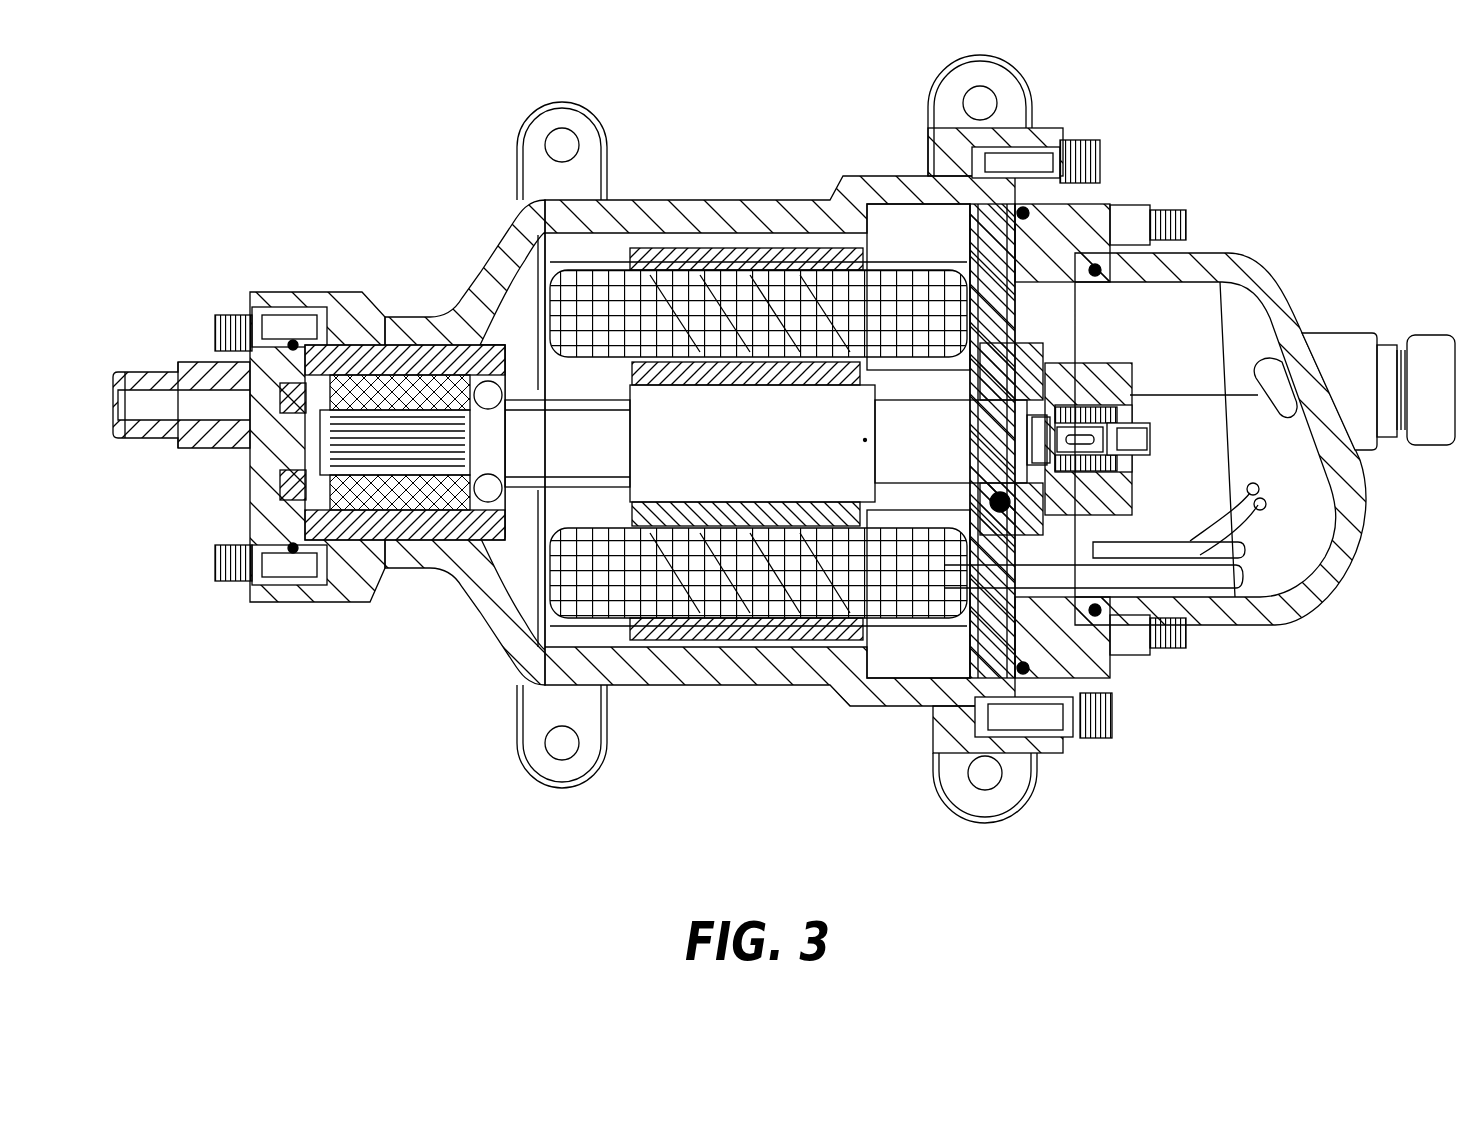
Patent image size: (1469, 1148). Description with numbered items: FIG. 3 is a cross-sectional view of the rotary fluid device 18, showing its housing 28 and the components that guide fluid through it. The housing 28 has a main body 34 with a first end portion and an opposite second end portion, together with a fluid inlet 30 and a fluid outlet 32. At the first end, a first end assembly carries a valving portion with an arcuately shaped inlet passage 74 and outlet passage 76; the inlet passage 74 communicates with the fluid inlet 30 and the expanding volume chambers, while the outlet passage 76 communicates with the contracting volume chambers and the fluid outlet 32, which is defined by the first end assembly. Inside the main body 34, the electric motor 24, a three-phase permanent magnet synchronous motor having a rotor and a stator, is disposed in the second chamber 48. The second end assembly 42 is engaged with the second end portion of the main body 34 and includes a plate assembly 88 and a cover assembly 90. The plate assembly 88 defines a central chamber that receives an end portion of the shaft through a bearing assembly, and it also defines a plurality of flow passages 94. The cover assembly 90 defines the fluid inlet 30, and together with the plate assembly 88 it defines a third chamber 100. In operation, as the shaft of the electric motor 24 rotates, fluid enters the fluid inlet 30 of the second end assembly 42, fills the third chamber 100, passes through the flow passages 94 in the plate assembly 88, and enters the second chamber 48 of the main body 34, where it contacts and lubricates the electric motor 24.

The rotary fluid device 18 is at (418, 93).
The housing 28 is at (752, 130).
The electric motor 24 is at (892, 240).
The second chamber 48 is at (760, 636).
The plate assembly 88 is at (1040, 125).
The flow passages 94 is at (1082, 210).
The third chamber 100 is at (1200, 300).
The outlet passage 76 is at (300, 397).
The fluid outlet 32 is at (125, 440).
The inlet passage 74 is at (295, 545).
The main body 34 is at (518, 672).
The fluid inlet 30 is at (1425, 452).
The second end assembly 42 is at (1352, 569).
The cover assembly 90 is at (1215, 622).